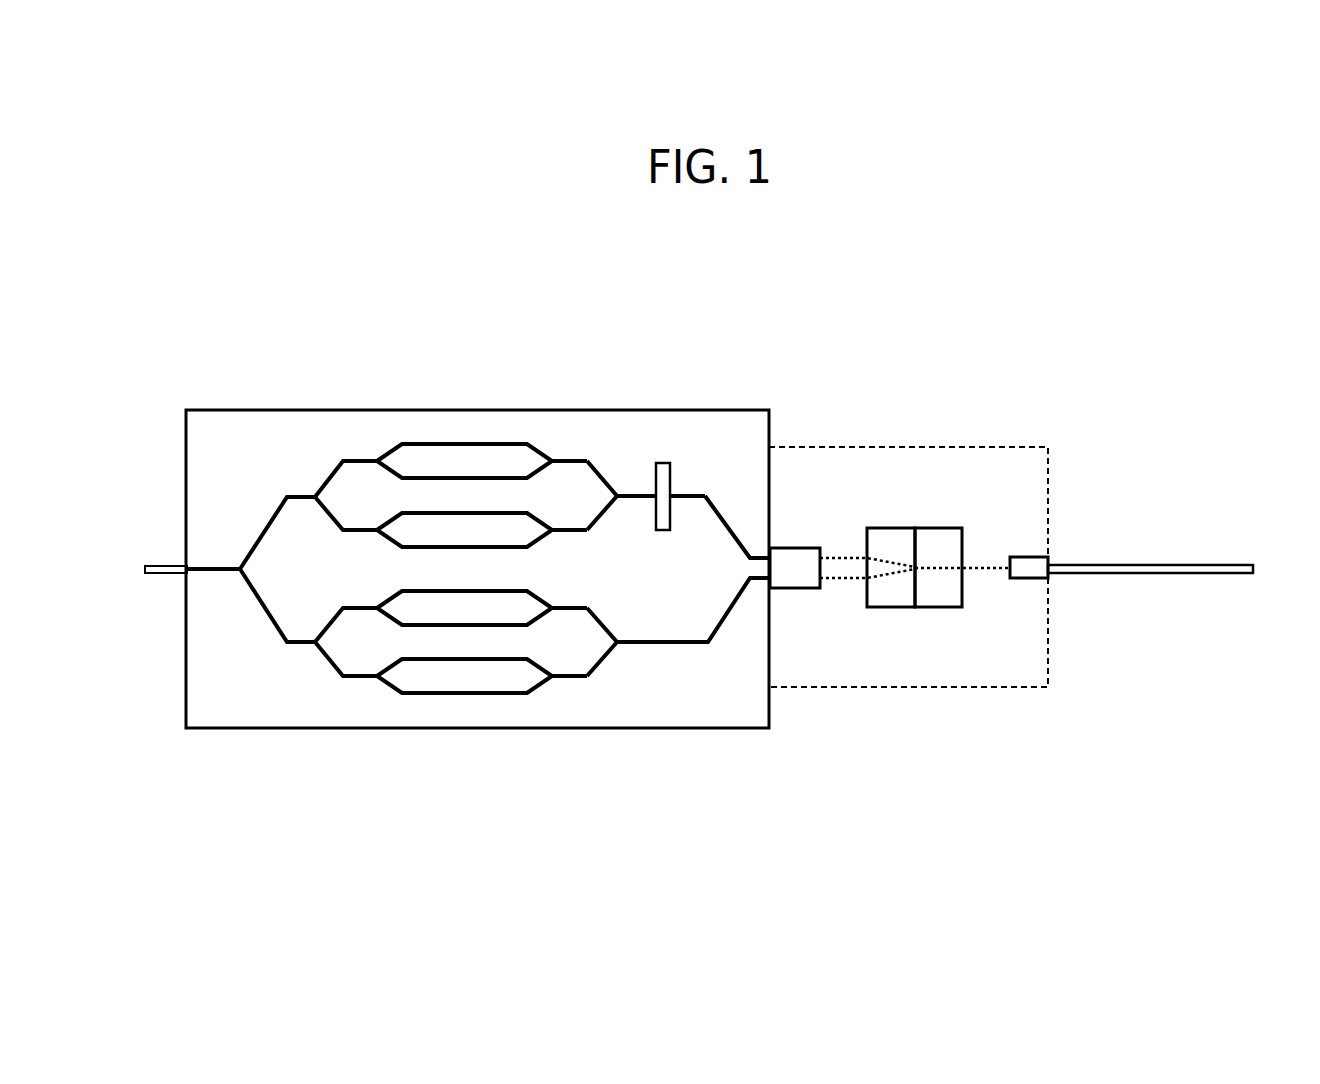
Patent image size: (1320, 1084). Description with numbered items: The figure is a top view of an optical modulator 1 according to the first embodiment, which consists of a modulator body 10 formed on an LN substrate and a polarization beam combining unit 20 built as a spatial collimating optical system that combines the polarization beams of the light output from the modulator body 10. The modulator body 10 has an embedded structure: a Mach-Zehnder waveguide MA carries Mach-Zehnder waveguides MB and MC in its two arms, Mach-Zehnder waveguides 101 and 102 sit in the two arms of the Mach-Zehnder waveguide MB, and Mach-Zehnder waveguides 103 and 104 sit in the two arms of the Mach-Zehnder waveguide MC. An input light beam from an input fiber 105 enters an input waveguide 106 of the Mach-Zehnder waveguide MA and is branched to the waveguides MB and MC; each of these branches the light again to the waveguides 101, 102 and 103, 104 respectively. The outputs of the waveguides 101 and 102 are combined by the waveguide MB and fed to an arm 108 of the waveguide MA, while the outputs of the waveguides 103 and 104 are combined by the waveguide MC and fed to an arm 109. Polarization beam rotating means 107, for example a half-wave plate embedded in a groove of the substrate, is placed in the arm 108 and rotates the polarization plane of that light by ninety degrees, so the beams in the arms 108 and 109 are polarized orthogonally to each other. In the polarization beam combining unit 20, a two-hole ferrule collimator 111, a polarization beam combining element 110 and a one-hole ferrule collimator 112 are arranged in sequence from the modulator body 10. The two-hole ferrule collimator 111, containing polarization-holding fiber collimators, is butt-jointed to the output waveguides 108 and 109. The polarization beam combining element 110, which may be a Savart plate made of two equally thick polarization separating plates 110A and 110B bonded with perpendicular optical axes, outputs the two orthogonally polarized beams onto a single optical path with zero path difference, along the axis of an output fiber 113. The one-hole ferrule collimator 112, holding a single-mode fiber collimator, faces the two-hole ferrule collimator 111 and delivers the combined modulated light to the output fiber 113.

The optical modulator 1 is at (774, 312).
The modulator body 10 is at (712, 410).
The polarization beam combining unit 20 is at (1020, 447).
The Mach-Zehnder waveguide 101 is at (532, 462).
The Mach-Zehnder waveguide 102 is at (532, 528).
The Mach-Zehnder waveguide 103 is at (532, 608).
The Mach-Zehnder waveguide 104 is at (532, 676).
The input fiber 105 is at (165, 565).
The input waveguide 106 is at (215, 565).
The polarization beam rotating means 107 is at (664, 462).
The arm 108 is at (722, 516).
The arm 109 is at (722, 624).
The polarization beam combining element 110 is at (988, 407).
The polarization separating plate 110A is at (890, 528).
The polarization separating plate 110B is at (940, 528).
The two-hole ferrule collimator 111 is at (803, 588).
The one-hole ferrule collimator 112 is at (1030, 557).
The output fiber 113 is at (1125, 565).
The Mach-Zehnder waveguide MA is at (757, 800).
The Mach-Zehnder waveguide MB is at (625, 395).
The Mach-Zehnder waveguide MC is at (625, 745).